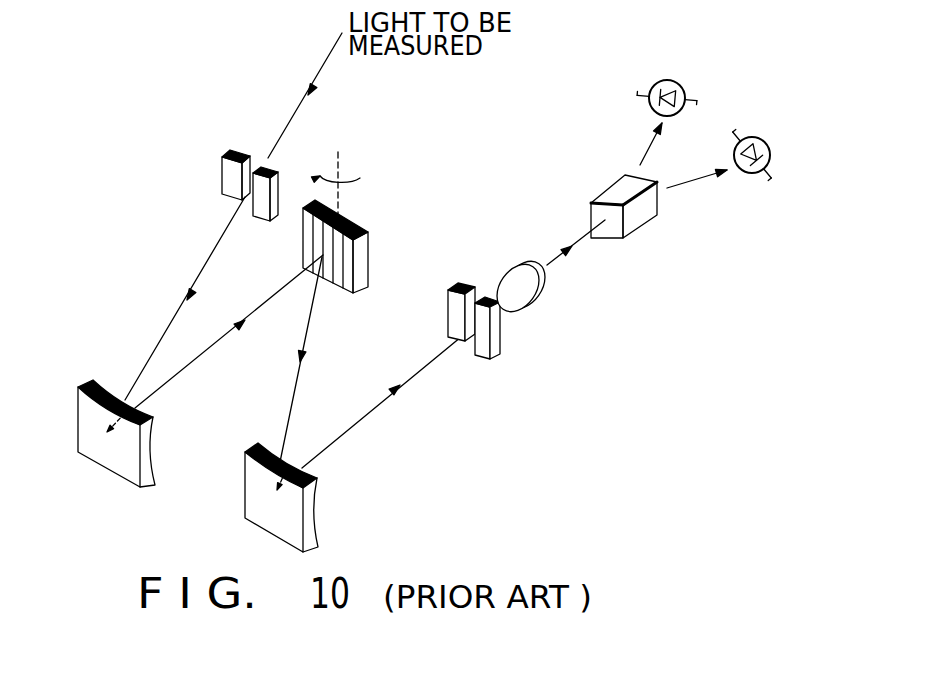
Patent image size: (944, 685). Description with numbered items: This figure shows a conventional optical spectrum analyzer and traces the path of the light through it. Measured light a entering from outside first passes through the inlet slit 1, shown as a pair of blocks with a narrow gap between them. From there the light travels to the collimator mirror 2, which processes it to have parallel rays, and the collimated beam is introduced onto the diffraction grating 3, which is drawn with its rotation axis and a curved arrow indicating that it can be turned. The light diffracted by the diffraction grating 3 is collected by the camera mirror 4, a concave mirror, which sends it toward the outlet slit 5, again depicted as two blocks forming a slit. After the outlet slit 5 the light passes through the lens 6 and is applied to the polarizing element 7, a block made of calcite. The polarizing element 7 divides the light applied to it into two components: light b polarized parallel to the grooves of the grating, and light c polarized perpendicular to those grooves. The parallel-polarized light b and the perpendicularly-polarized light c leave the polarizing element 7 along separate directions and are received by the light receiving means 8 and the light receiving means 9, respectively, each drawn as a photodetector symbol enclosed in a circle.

The inlet slit 1 is at (223, 177).
The collimator mirror 2 is at (114, 464).
The diffraction grating 3 is at (367, 238).
The camera mirror 4 is at (266, 525).
The outlet slit 5 is at (497, 353).
The lens 6 is at (532, 302).
The polarizing element 7 is at (638, 226).
The light receiving means 8 is at (756, 137).
The light receiving means 9 is at (668, 80).
The measured light a is at (322, 62).
The parallel-polarized light b is at (690, 188).
The perpendicularly-polarized light c is at (650, 143).